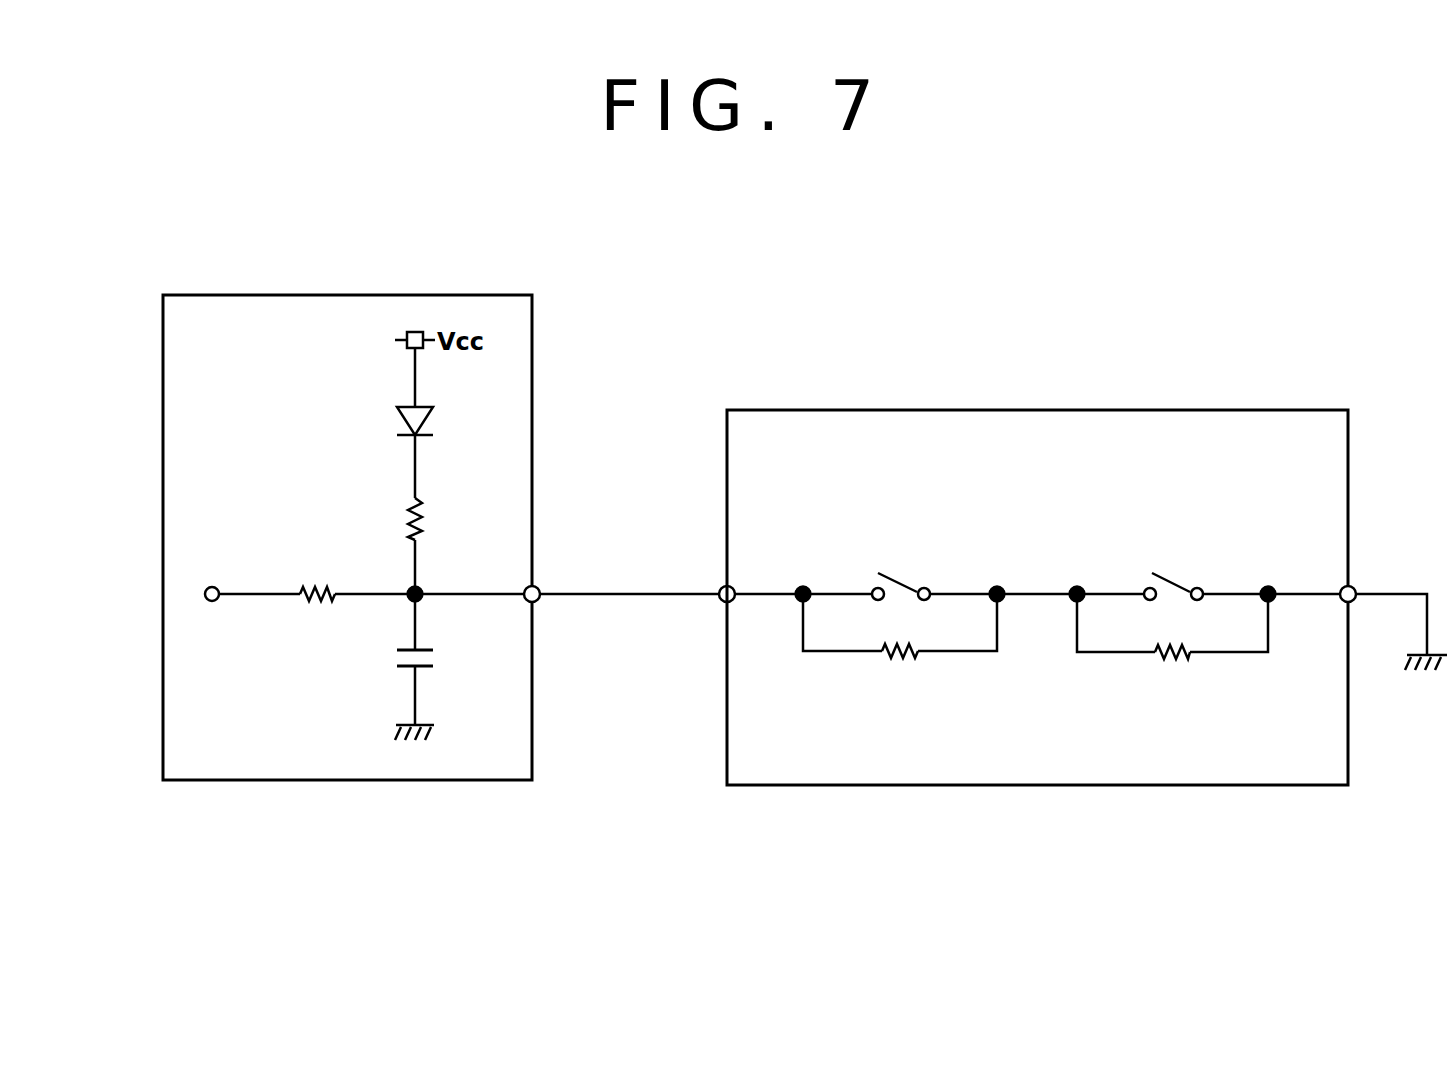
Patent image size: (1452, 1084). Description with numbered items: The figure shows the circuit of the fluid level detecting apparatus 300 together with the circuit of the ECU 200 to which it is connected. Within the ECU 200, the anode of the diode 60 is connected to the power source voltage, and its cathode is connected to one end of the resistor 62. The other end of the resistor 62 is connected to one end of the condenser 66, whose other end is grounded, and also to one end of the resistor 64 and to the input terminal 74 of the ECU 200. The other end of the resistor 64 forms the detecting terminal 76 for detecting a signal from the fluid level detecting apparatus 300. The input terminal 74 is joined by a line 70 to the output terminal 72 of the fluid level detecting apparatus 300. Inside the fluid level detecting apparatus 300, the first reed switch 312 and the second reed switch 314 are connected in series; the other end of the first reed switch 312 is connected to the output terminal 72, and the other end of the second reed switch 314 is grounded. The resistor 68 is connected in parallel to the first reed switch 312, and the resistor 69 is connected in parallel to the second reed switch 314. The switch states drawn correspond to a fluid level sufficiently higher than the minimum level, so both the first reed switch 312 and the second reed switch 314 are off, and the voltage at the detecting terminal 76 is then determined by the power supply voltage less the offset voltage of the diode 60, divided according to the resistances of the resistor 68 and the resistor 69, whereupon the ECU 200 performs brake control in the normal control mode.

The ECU 200 is at (343, 295).
The fluid level detecting apparatus 300 is at (1038, 410).
The diode 60 is at (437, 418).
The resistor 62 is at (437, 515).
The resistor 64 is at (320, 578).
The condenser 66 is at (437, 655).
The resistor 68 is at (902, 663).
The resistor 69 is at (1175, 664).
The signal line 70 is at (630, 590).
The output terminal 72 is at (719, 601).
The input terminal 74 is at (540, 601).
The detecting terminal 76 is at (210, 580).
The first reed switch 312 is at (914, 556).
The second reed switch 314 is at (1185, 556).